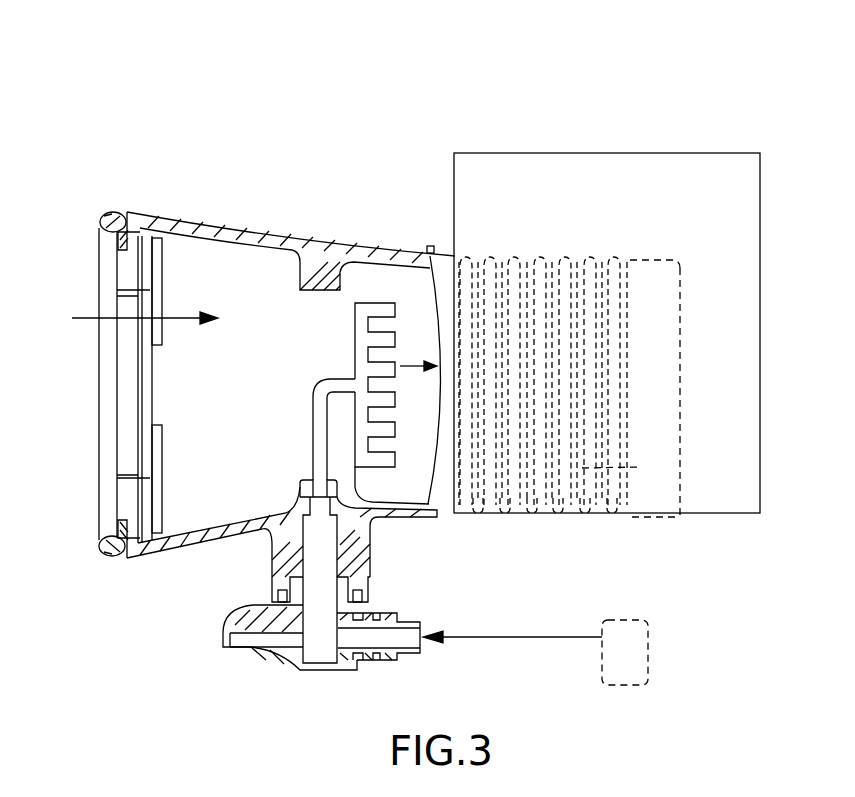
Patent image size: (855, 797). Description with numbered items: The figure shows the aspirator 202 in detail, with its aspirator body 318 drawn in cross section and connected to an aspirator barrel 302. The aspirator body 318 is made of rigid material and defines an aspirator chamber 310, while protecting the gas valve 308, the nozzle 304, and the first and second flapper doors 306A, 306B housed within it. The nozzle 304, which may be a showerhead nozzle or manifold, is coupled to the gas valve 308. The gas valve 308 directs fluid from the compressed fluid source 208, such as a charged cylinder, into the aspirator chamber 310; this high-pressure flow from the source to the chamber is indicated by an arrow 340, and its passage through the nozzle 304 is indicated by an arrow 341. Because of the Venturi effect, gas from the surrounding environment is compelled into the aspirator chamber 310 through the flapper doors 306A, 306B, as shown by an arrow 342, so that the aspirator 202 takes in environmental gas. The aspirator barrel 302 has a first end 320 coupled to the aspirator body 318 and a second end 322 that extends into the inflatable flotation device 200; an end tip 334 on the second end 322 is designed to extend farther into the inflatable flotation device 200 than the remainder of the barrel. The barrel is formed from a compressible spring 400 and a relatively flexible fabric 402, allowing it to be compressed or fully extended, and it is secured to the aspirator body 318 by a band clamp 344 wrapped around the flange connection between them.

The inflatable flotation device 200 is at (622, 513).
The aspirator 202 is at (376, 161).
The compressed fluid source 208 is at (650, 672).
The aspirator barrel 302 is at (512, 245).
The nozzle 304 is at (378, 307).
The first flapper door 306A is at (153, 262).
The second flapper door 306B is at (153, 506).
The gas valve 308 is at (317, 657).
The aspirator chamber 310 is at (190, 395).
The aspirator body 318 is at (328, 262).
The first end 320 is at (480, 240).
The second end 322 is at (680, 443).
The end tip 334 is at (680, 281).
The arrow 340 is at (513, 640).
The arrow 341 is at (413, 362).
The arrow 342 is at (72, 320).
The band clamp 344 is at (434, 247).
The compressible spring 400 is at (640, 467).
The fabric 402 is at (622, 514).